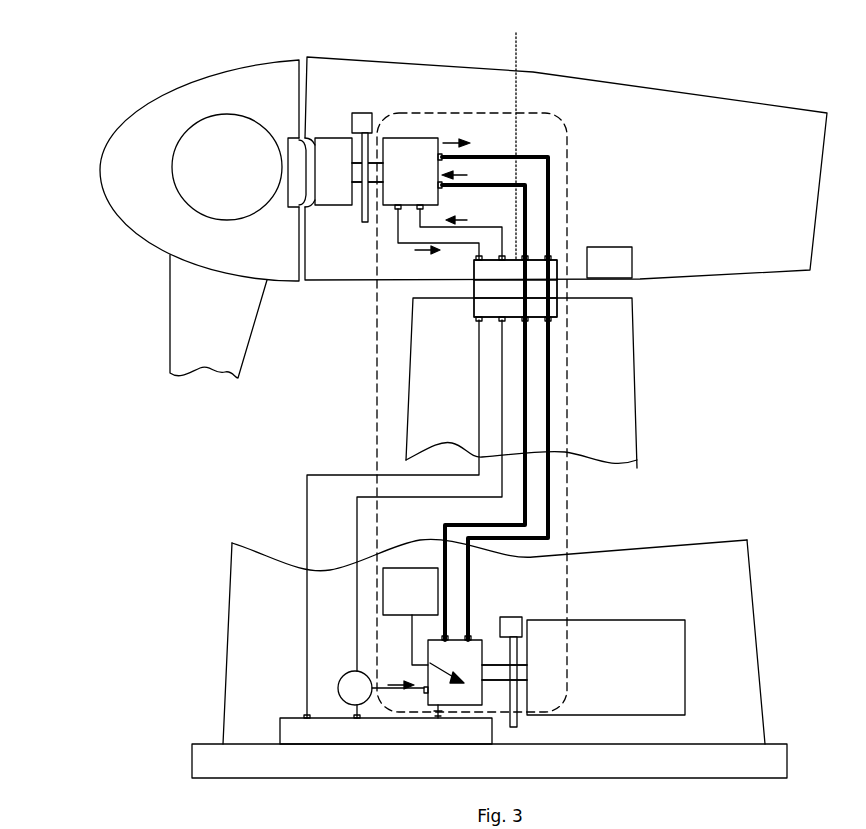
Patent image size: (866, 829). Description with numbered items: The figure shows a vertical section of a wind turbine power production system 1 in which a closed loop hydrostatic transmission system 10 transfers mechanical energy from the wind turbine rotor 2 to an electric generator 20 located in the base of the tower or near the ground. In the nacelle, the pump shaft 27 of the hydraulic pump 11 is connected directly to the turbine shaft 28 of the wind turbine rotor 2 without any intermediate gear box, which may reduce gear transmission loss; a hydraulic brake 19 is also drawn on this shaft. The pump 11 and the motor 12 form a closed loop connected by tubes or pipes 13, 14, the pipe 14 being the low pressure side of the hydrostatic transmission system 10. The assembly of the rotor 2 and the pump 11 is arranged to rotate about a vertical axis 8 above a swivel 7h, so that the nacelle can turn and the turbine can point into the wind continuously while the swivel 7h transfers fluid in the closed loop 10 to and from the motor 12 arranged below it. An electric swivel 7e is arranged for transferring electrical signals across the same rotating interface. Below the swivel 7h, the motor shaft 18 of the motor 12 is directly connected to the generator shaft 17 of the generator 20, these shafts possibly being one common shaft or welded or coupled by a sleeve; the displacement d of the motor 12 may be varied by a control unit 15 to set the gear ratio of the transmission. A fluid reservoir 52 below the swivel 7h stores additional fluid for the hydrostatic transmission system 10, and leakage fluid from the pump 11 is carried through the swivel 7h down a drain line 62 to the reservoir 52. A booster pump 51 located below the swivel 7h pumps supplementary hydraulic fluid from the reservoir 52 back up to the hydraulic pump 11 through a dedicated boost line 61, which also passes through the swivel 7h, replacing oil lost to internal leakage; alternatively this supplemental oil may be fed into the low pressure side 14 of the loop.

The wind turbine power production system 1 is at (43, 36).
The wind turbine rotor 2 is at (203, 219).
The swivel 7h is at (555, 267).
The electric swivel 7e is at (569, 242).
The vertical axis 8 is at (513, 136).
The hydrostatic transmission system 10 is at (545, 112).
The pump 11 is at (412, 173).
The motor 12 is at (453, 677).
The tubes or pipes 13 is at (508, 386).
The low pressure side 14 is at (495, 402).
The control unit 15 is at (410, 616).
The generator shaft 17 is at (485, 662).
The motor shaft 18 is at (519, 618).
The hydraulic brake 19 is at (435, 407).
The electric generator 20 is at (606, 667).
The pump shaft 27 is at (372, 157).
The turbine shaft 28 is at (394, 96).
The booster pump 51 is at (381, 688).
The fluid reservoir 52 is at (386, 729).
The boost line 61 is at (365, 525).
The drain line 62 is at (313, 490).